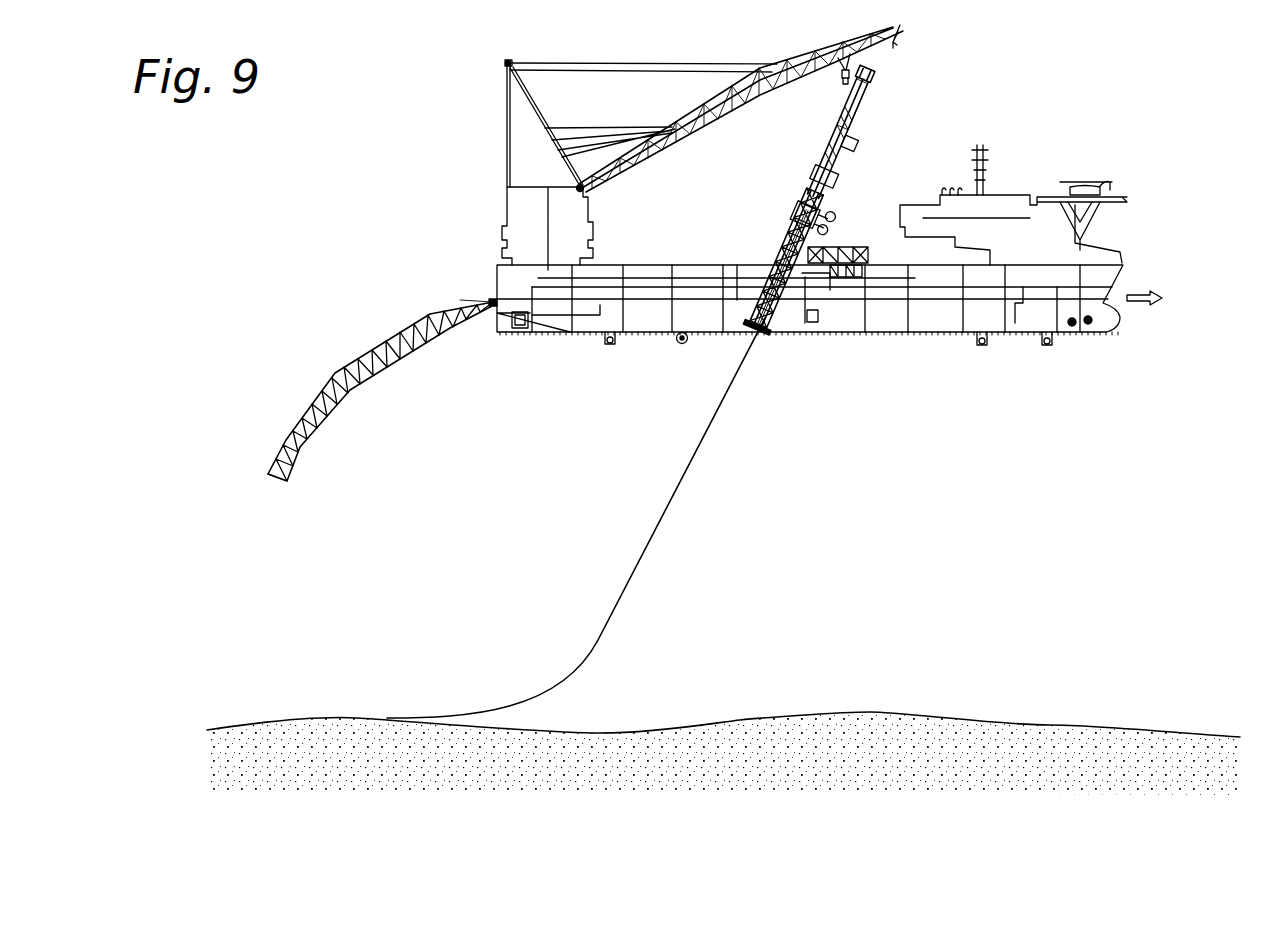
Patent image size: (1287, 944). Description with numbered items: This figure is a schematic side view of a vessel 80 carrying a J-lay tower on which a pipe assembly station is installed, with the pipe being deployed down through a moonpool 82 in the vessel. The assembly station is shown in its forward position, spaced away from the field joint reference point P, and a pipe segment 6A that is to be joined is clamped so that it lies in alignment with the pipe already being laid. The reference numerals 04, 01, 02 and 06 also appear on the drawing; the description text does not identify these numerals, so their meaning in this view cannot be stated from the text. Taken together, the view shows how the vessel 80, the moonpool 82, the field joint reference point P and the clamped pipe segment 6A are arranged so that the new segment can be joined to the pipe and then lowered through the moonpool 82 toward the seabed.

The upper tower section 04 is at (862, 115).
The working platform 01 is at (853, 242).
The platform support 02 is at (873, 247).
The pipe segment 6A is at (808, 193).
The field joint reference point P is at (775, 265).
The vessel 80 is at (829, 185).
The moonpool 82 is at (803, 332).
The pipeline 06 is at (692, 455).